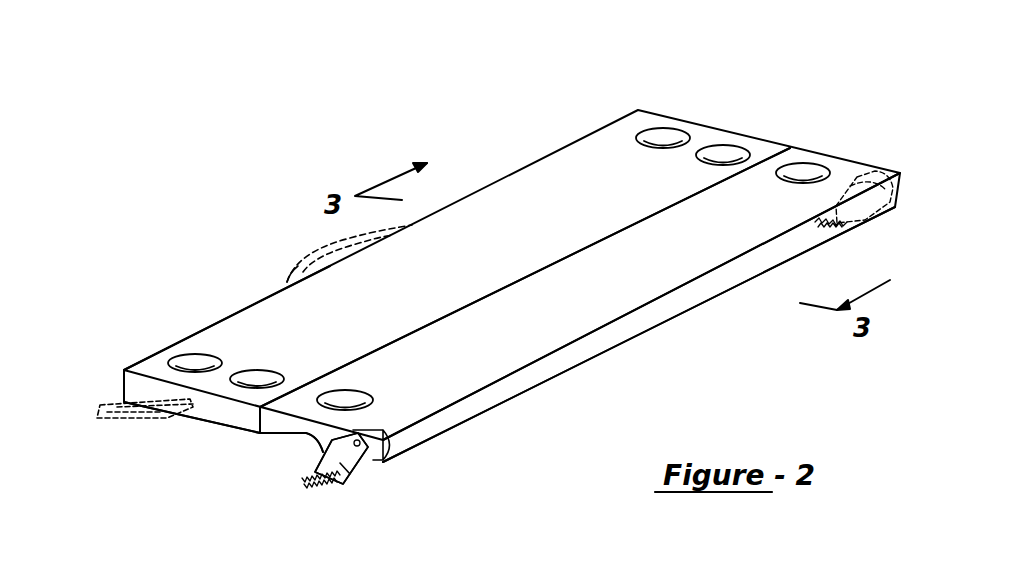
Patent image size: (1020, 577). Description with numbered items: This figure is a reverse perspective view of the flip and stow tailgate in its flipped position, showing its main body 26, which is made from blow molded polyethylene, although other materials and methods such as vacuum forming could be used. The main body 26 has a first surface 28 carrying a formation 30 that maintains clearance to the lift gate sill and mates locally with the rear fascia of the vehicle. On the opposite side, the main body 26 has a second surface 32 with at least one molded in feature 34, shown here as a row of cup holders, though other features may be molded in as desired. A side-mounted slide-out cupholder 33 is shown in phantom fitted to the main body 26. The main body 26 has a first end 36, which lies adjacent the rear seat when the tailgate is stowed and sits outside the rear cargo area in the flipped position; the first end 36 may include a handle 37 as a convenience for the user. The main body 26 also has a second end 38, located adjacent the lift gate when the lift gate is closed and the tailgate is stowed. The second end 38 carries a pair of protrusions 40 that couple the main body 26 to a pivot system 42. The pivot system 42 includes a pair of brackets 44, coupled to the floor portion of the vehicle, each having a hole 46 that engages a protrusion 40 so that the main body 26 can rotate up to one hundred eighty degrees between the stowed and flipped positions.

The main body 26 is at (526, 153).
The first surface 28 is at (204, 423).
The formation 30 is at (303, 440).
The second surface 32 is at (583, 297).
The side-mounted slide-out cupholder 33 is at (100, 410).
The molded in feature 34 is at (222, 358).
The first end 36 is at (222, 322).
The handle 37 is at (304, 260).
The second end 38 is at (613, 332).
The protrusions 40 is at (398, 450).
The pivot system 42 is at (308, 498).
The brackets 44 is at (354, 476).
The hole 46 is at (328, 445).